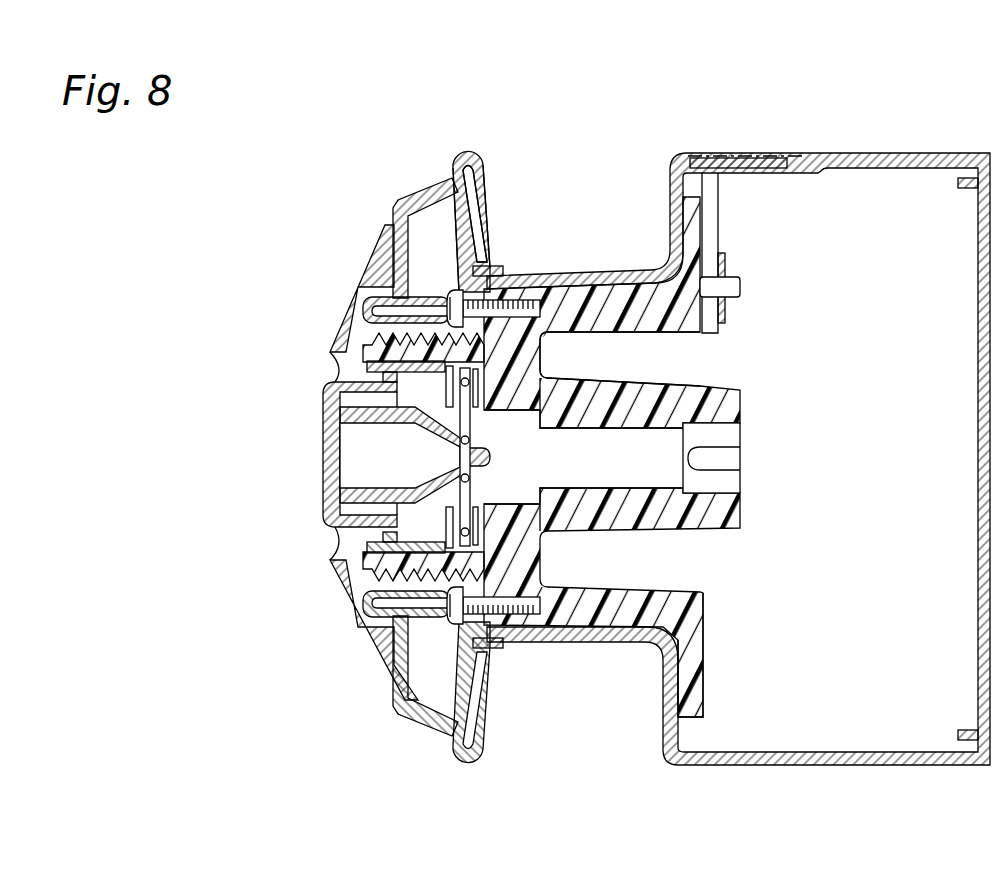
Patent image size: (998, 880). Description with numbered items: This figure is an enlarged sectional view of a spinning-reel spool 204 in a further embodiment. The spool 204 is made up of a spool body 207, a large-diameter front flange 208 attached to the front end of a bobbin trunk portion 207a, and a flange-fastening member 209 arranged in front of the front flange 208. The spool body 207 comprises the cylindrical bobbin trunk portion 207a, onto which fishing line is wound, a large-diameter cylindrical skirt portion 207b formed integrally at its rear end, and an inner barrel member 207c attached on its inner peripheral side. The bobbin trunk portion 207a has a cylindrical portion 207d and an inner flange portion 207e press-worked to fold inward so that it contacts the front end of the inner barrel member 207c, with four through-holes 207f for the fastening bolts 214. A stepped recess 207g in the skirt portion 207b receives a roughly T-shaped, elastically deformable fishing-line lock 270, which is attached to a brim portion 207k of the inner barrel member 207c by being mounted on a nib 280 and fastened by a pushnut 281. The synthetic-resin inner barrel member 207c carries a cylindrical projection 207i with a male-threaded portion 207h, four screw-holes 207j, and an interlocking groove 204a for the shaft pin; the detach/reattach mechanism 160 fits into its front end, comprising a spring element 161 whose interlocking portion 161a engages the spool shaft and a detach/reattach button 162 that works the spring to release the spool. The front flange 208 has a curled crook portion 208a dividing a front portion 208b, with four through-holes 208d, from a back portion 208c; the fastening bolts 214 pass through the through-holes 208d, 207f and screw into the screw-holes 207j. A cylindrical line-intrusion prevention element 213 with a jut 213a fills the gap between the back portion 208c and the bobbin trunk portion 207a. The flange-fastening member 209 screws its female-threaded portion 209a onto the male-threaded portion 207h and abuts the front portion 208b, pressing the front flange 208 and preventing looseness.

The detach/reattach mechanism 160 is at (343, 530).
The spring element 161 is at (470, 500).
The interlocking portion 161a is at (470, 440).
The detach/reattach button 162 is at (325, 418).
The spool 204 is at (596, 140).
The interlocking groove 204a is at (742, 462).
The spool body 207 is at (672, 172).
The bobbin trunk portion 207a is at (606, 266).
The skirt portion 207b is at (912, 150).
The inner barrel member 207c is at (587, 278).
The cylindrical portion 207d is at (498, 270).
The inner flange portion 207e is at (478, 293).
The through-holes 207f is at (450, 317).
The stepped recess 207g is at (803, 150).
The male-threaded portion 207h is at (410, 695).
The cylindrical projection 207i is at (372, 590).
The screw-holes 207j is at (560, 333).
The brim portion 207k is at (697, 667).
The front flange 208 is at (440, 176).
The crook portion 208a is at (477, 157).
The front portion 208b is at (463, 238).
The back portion 208c is at (484, 195).
The through-holes 208d is at (443, 693).
The flange-fastening member 209 is at (397, 200).
The female-threaded portion 209a is at (418, 578).
The line-intrusion prevention element 213 is at (495, 262).
The jut 213a is at (493, 645).
The fastening bolts 214 is at (395, 335).
The fishing-line lock 270 is at (722, 150).
The nib 280 is at (735, 280).
The pushnut 281 is at (727, 315).